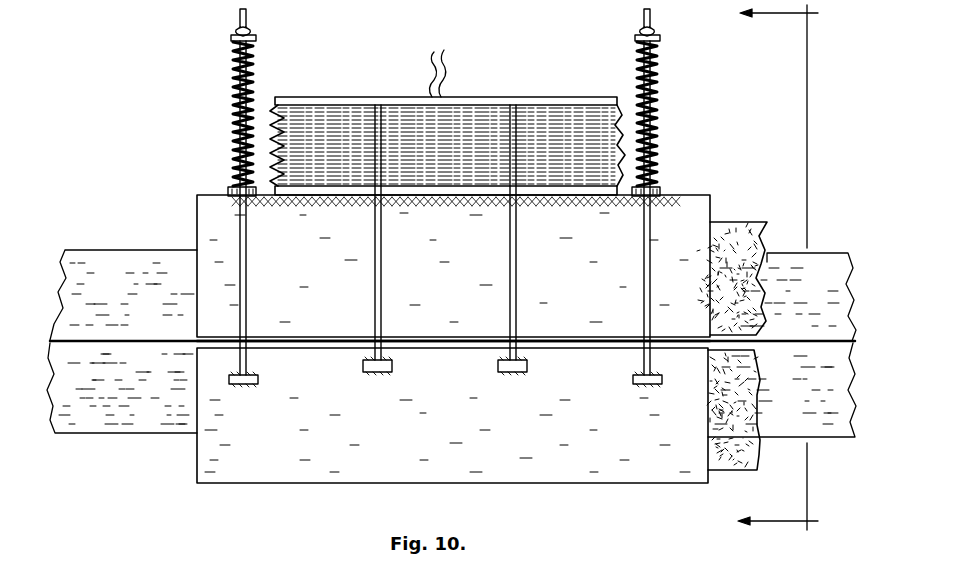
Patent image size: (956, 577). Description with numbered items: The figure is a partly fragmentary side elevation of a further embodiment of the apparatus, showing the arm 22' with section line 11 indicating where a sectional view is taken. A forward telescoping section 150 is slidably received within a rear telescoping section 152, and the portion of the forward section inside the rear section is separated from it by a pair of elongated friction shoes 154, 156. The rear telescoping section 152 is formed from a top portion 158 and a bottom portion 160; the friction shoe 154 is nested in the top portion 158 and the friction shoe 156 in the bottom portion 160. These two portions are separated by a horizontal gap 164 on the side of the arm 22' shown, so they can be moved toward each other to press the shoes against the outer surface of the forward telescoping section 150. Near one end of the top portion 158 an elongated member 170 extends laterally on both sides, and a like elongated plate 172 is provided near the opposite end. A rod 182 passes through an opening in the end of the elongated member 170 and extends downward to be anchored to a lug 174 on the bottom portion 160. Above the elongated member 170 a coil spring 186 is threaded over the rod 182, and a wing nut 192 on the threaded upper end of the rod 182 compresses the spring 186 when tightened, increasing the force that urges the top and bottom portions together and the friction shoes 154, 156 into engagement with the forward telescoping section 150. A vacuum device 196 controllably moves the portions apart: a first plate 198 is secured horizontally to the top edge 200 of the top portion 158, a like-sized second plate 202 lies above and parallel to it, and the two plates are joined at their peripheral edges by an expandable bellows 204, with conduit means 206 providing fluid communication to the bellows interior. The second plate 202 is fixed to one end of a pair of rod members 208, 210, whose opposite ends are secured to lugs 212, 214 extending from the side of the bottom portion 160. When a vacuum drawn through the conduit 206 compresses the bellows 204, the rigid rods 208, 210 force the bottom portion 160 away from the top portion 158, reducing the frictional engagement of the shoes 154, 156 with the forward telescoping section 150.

The arm 22' is at (447, 120).
The forward telescoping section 150 is at (165, 252).
The rear telescoping section 152 is at (361, 486).
The friction shoe 154 is at (722, 472).
The friction shoe 156 is at (726, 223).
The top portion 158 is at (462, 293).
The bottom portion 160 is at (458, 426).
The horizontal gap 164 is at (329, 314).
The elongated member 170 is at (657, 191).
The elongated plate 172 is at (218, 198).
The lug 174 is at (634, 383).
The rod 182 is at (650, 205).
The coil spring 186 is at (655, 92).
The wing nut 192 is at (652, 26).
The vacuum device 196 is at (447, 133).
The first plate 198 is at (535, 200).
The top edge 200 is at (226, 197).
The second plate 202 is at (490, 97).
The expandable bellows 204 is at (619, 88).
The conduit means 206 is at (441, 63).
The rod member 208 is at (514, 253).
The rod member 210 is at (360, 253).
The lug 212 is at (508, 375).
The lug 214 is at (378, 377).
The section line 11- 11 is at (765, 268).